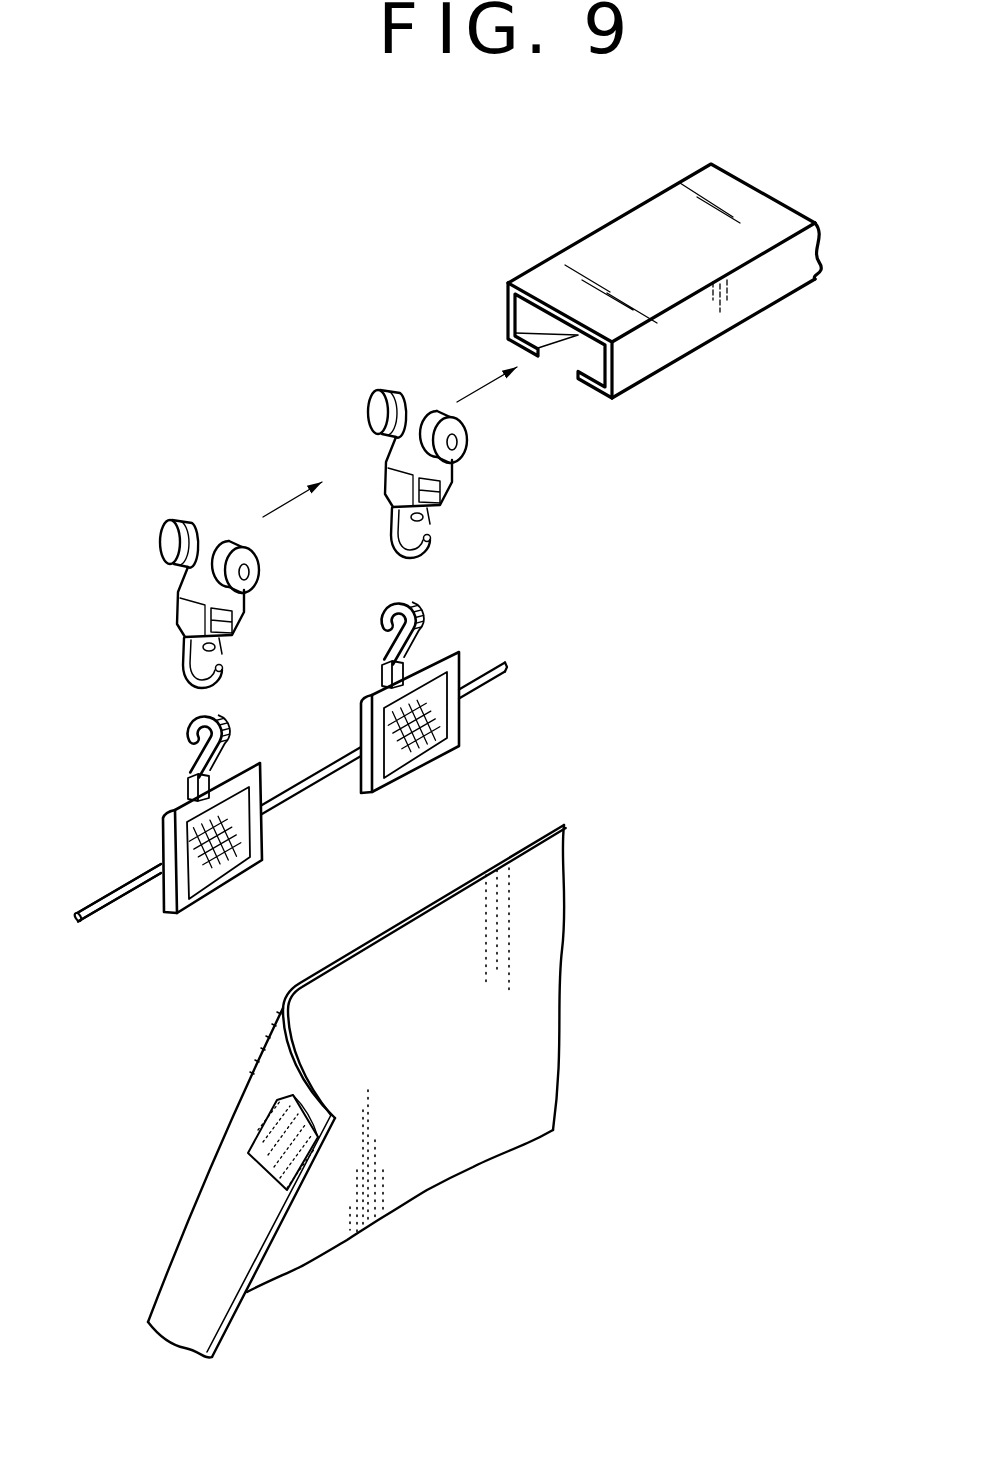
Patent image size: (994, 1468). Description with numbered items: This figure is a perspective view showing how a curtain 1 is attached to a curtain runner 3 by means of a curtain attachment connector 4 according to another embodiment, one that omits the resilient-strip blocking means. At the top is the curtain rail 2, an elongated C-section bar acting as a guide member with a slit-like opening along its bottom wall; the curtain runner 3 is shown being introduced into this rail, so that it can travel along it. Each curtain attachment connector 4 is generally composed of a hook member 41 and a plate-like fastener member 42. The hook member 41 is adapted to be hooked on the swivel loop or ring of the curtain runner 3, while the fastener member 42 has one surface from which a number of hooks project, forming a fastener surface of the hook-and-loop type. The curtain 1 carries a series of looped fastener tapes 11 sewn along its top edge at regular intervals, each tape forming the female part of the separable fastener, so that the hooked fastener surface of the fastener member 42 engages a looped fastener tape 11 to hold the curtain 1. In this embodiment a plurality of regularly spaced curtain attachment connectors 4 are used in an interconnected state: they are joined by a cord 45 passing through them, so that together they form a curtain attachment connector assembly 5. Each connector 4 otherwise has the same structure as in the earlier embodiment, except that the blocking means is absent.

The curtain 1 is at (334, 1091).
The looped fastener tape 11 is at (277, 1143).
The curtain rail 2 is at (690, 337).
The curtain runner 3 is at (168, 597).
The curtain attachment connector 4 is at (456, 673).
The hook member 41 is at (406, 604).
The fastener member 42 is at (462, 747).
The curtain attachment connector assembly 5 is at (493, 690).
The cord 45 is at (119, 904).